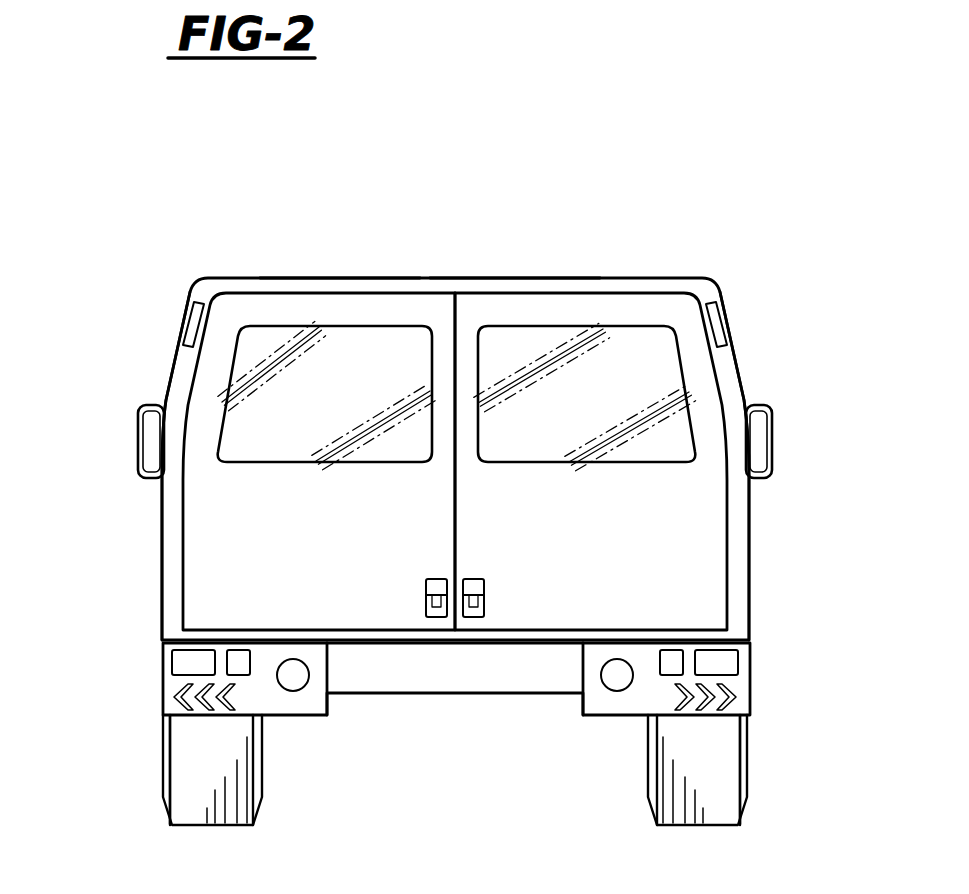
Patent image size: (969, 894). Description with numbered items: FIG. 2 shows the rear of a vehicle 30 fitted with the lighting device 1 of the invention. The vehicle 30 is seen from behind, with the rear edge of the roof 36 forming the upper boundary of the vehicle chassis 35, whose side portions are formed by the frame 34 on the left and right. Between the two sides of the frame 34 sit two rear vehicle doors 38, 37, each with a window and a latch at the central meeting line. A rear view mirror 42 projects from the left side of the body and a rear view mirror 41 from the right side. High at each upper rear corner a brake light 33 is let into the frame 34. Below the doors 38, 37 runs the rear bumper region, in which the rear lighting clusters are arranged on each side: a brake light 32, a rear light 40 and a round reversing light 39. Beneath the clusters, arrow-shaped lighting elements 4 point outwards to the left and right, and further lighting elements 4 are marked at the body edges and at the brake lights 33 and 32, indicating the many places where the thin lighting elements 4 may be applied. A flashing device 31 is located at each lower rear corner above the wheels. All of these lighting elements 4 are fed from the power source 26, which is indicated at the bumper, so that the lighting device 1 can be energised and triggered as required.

The lighting device 1 is at (222, 727).
The lighting element 4 is at (180, 298).
The power source 26 is at (465, 738).
The vehicle 30 is at (683, 238).
The flashing device 31 is at (192, 734).
The brake light 32 is at (182, 660).
The brake light 33 is at (188, 330).
The frame 34 is at (167, 502).
The vehicle chassis 35 is at (518, 275).
The roof 36 is at (335, 278).
The vehicle door 37 is at (718, 497).
The vehicle door 38 is at (190, 463).
The reversing light 39 is at (295, 688).
The rear light 40 is at (237, 653).
The rear view mirror 41 is at (768, 450).
The rear view mirror 42 is at (150, 422).